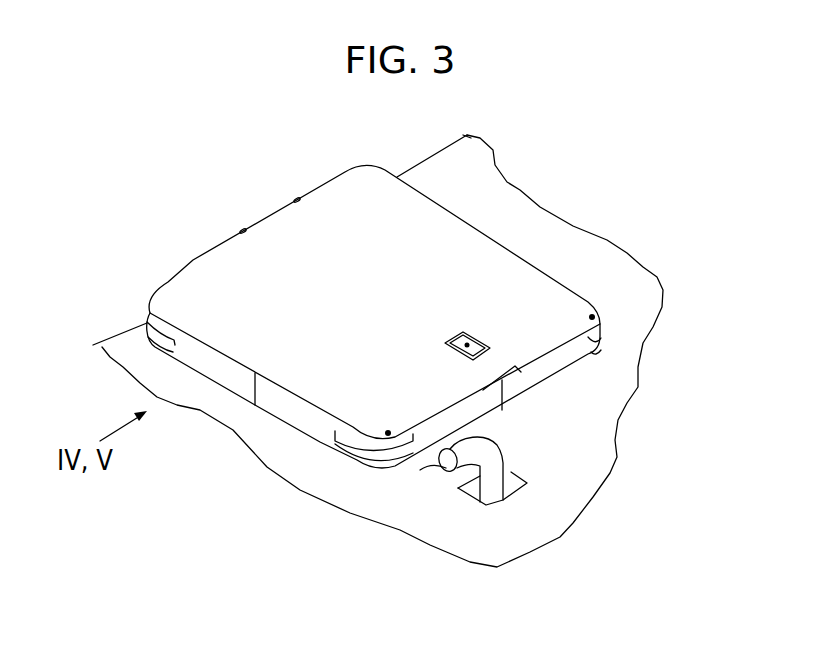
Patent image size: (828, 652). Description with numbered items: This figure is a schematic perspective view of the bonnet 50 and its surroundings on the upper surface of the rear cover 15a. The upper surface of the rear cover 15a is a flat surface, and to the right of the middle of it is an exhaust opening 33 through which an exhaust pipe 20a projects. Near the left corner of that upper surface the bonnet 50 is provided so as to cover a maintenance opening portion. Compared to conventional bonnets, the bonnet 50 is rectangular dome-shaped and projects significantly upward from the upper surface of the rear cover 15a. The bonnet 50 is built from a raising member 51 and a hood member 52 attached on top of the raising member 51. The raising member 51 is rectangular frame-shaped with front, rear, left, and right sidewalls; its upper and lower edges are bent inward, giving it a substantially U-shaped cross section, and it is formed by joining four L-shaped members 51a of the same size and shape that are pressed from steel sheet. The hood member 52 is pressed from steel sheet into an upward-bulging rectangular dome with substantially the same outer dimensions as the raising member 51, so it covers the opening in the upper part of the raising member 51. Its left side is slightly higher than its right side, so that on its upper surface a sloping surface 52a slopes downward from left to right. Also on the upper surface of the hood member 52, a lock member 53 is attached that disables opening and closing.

The rear cover 15a is at (602, 403).
The exhaust pipe 20a is at (443, 468).
The exhaust opening 33 is at (508, 471).
The bonnet 50 is at (229, 181).
The raising member 51 is at (290, 415).
The L-shaped member 51a is at (600, 320).
The hood member 52 is at (362, 190).
The sloping surface 52a is at (373, 307).
The lock member 53 is at (473, 337).